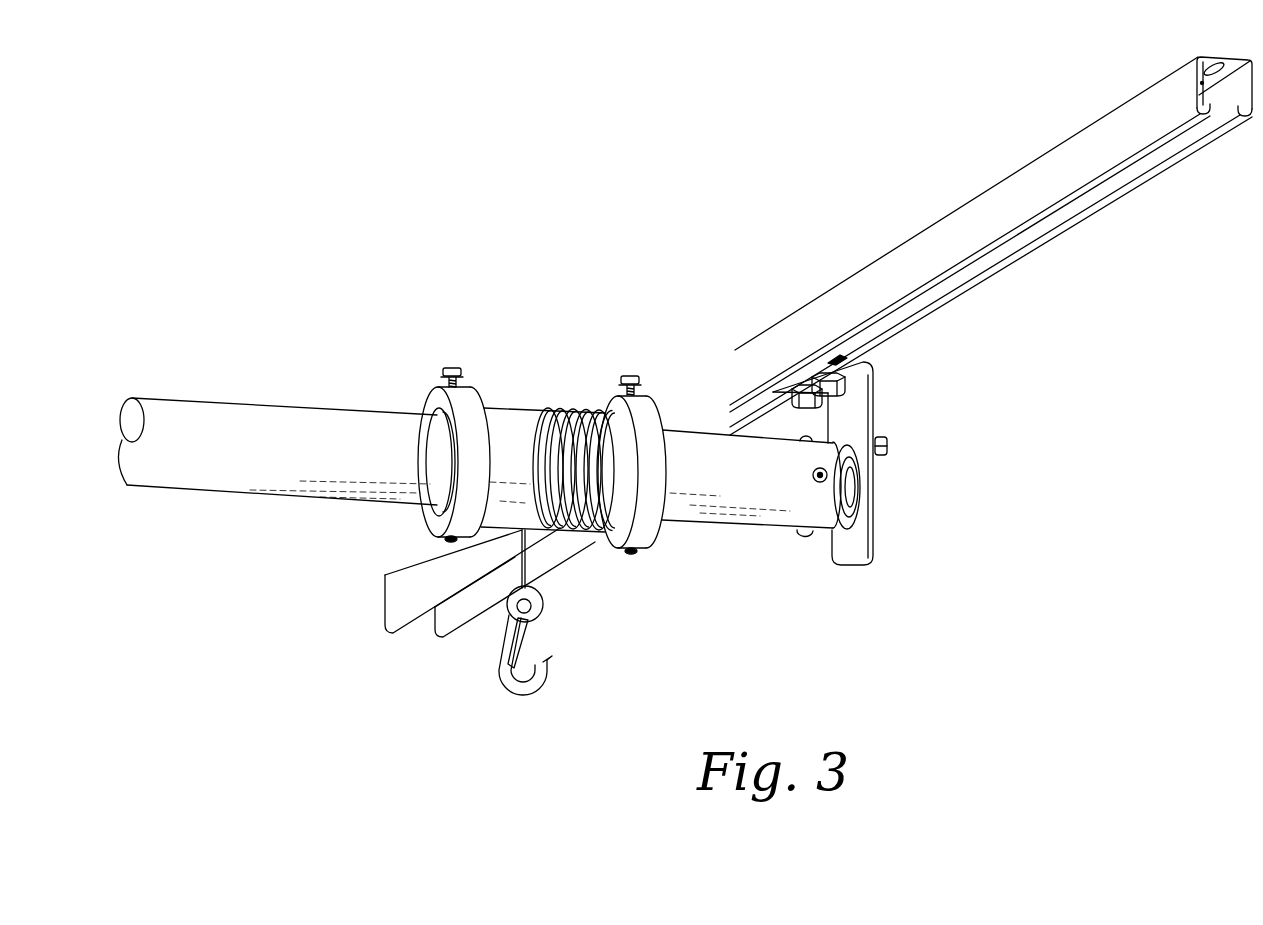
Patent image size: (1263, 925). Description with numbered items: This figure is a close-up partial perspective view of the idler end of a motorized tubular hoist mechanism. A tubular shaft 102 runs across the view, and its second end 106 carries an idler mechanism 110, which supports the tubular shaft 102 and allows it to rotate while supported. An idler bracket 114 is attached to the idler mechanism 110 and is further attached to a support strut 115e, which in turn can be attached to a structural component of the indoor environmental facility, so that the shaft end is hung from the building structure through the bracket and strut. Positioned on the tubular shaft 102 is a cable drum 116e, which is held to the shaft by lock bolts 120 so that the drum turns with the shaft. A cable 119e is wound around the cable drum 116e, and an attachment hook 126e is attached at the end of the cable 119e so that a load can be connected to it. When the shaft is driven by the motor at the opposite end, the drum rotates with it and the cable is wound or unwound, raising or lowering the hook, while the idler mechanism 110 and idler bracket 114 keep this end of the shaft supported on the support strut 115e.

The tubular shaft 102 is at (275, 405).
The second end 106 is at (797, 618).
The idler mechanism 110 is at (849, 500).
The idler bracket 114 is at (875, 407).
The support strut 115e is at (887, 256).
The cable drum 116e is at (542, 453).
The cable 119e is at (568, 532).
The lock bolts 120 is at (461, 372).
The attachment hook 126e is at (515, 701).